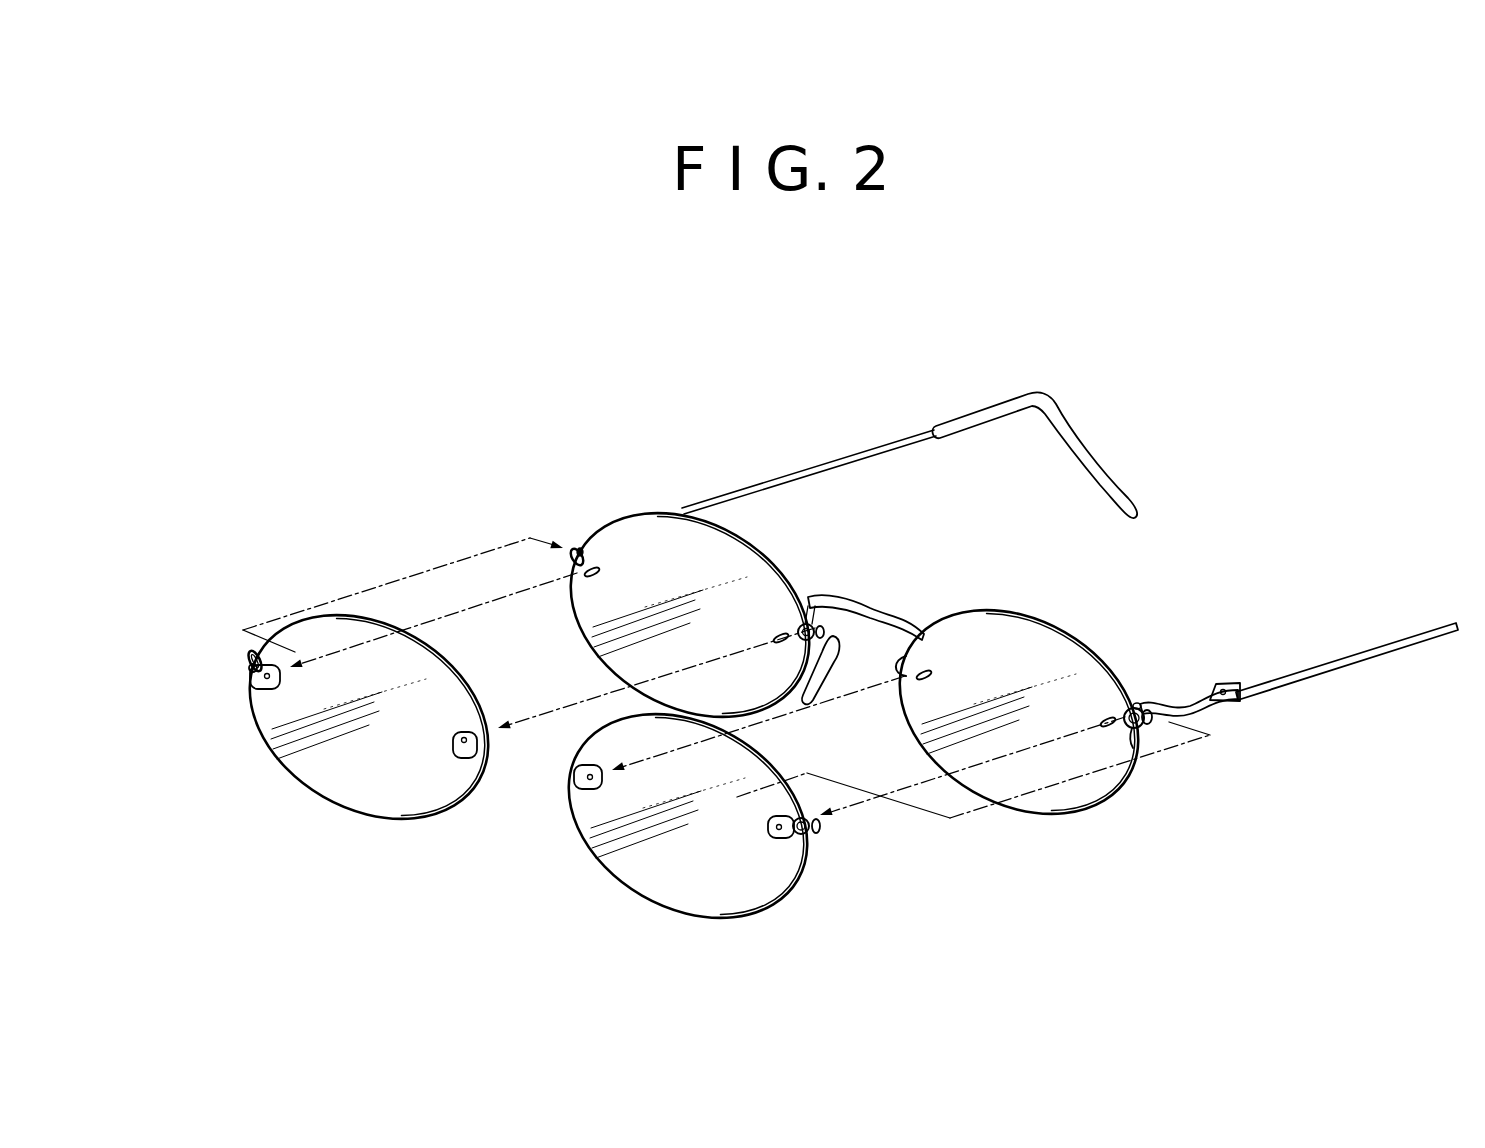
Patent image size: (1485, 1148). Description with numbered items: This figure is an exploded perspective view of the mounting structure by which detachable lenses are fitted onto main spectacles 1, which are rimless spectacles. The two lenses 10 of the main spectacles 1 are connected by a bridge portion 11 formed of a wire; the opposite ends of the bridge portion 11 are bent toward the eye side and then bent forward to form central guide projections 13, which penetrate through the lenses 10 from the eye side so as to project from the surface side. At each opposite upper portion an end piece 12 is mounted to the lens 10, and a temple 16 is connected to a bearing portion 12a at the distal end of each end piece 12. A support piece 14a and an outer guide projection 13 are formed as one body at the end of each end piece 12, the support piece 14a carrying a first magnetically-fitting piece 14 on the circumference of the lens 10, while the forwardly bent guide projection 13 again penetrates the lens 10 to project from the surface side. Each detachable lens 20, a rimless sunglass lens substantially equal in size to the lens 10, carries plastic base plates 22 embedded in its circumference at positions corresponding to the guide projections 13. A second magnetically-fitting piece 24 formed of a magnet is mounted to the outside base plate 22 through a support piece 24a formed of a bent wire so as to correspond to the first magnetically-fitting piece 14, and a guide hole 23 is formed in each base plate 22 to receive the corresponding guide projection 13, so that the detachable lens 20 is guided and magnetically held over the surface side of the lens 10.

The main spectacles 1 is at (960, 338).
The lens 10 is at (744, 550).
The bridge portion 11 is at (880, 612).
The end piece 12 is at (1136, 750).
The bearing portion 12a is at (1229, 684).
The guide projection 13 is at (594, 578).
The first magnetically-fitting piece 14 is at (576, 549).
The support piece 14a is at (578, 548).
The temple 16 is at (856, 458).
The detachable lens 20 is at (366, 806).
The base plate 22 is at (256, 688).
The guide hole 23 is at (276, 688).
The second magnetically-fitting piece 24 is at (250, 652).
The support piece 24a is at (248, 664).